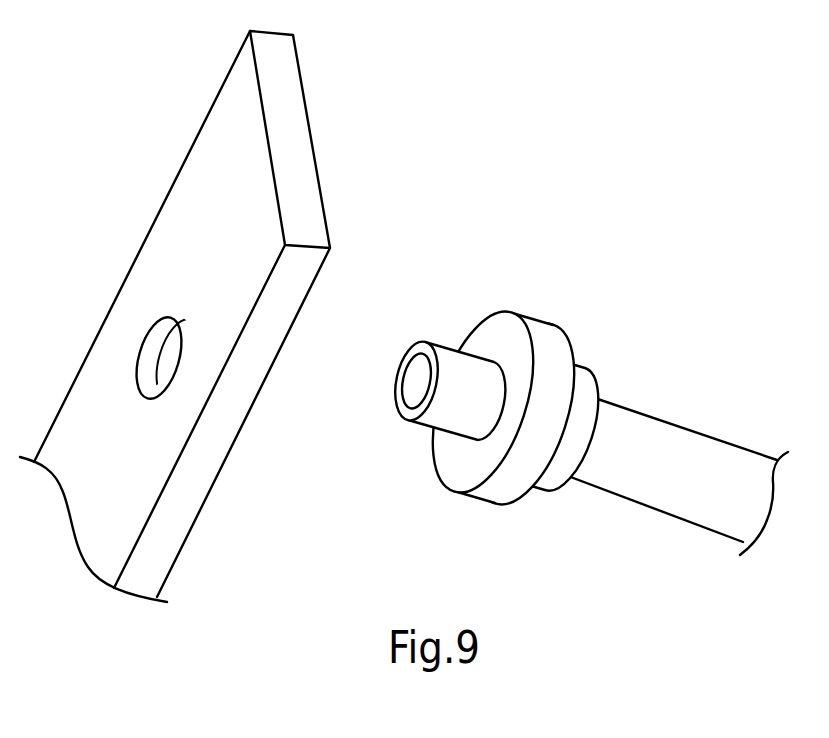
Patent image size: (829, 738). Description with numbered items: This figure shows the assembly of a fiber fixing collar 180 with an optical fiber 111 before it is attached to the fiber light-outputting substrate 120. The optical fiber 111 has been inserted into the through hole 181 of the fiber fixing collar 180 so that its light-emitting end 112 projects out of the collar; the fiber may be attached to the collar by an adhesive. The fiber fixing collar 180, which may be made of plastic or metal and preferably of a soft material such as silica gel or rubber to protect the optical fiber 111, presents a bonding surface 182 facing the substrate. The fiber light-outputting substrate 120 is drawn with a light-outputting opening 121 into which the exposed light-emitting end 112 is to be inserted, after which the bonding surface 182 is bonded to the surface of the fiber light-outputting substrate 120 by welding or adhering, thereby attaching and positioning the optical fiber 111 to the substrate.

The optical fiber 111 is at (637, 425).
The light-emitting end 112 is at (421, 342).
The fiber light-outputting substrate 120 is at (297, 125).
The light-outputting opening 121 is at (167, 332).
The fiber fixing collar 180 is at (574, 381).
The through hole 181 is at (472, 442).
The bonding surface 182 is at (500, 326).